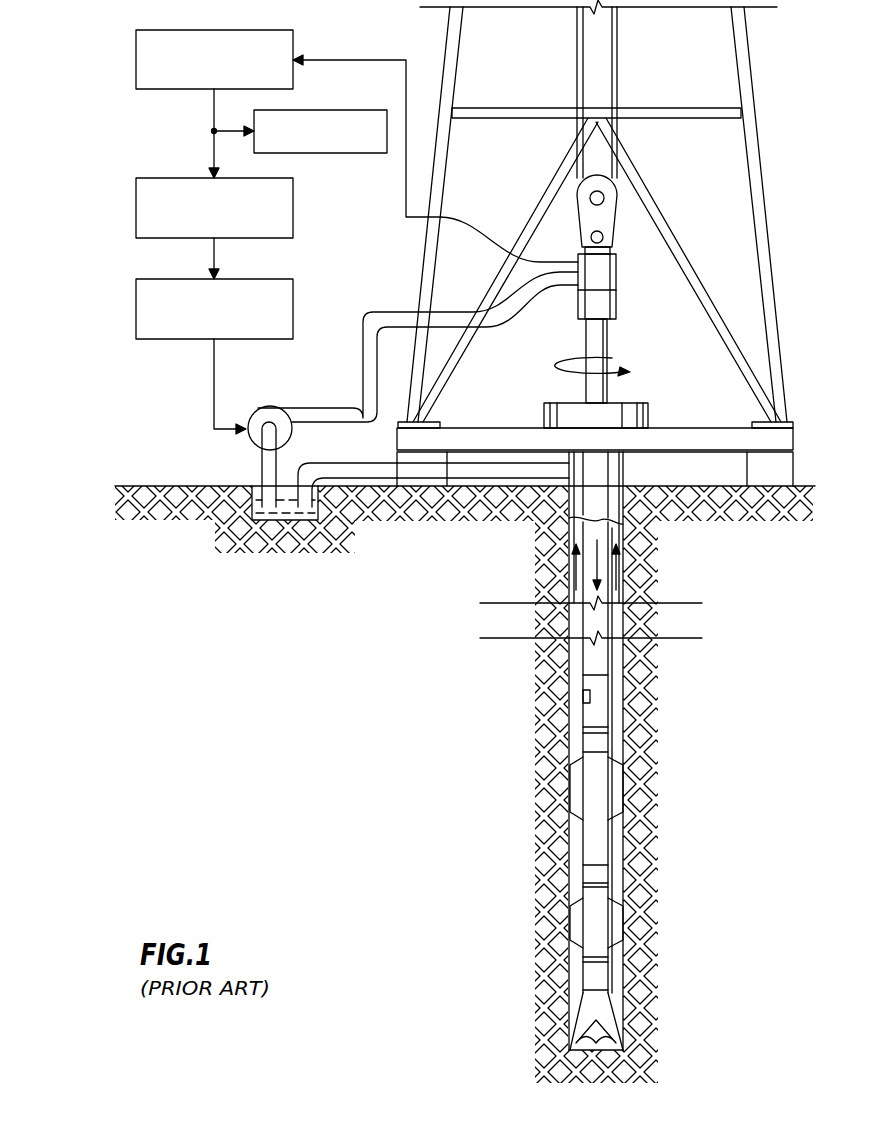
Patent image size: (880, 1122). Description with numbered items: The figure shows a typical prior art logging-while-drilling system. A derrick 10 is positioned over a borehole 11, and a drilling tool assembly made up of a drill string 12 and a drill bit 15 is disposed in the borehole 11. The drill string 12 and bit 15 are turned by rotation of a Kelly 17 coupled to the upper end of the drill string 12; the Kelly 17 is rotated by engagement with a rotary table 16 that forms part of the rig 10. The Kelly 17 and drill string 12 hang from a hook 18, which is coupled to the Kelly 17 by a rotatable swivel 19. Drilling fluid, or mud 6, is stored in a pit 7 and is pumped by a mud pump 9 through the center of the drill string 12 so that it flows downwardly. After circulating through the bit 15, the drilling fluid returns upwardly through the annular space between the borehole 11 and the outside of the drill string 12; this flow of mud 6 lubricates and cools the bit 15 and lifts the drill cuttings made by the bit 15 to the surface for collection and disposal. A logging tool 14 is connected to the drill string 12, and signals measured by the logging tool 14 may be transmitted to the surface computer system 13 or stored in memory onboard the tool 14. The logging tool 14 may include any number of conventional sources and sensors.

The drilling fluid (mud) 6 is at (285, 514).
The pit 7 is at (250, 502).
The mud pump 9 is at (278, 406).
The derrick 10 is at (392, 287).
The borehole 11 is at (630, 712).
The drill string 12 is at (614, 660).
The surface computer system 13 is at (118, 360).
The logging tool 14 is at (680, 970).
The drill bit 15 is at (605, 1020).
The rotary table 16 is at (632, 403).
The Kelly 17 is at (608, 337).
The hook 18 is at (622, 233).
The swivel 19 is at (617, 304).